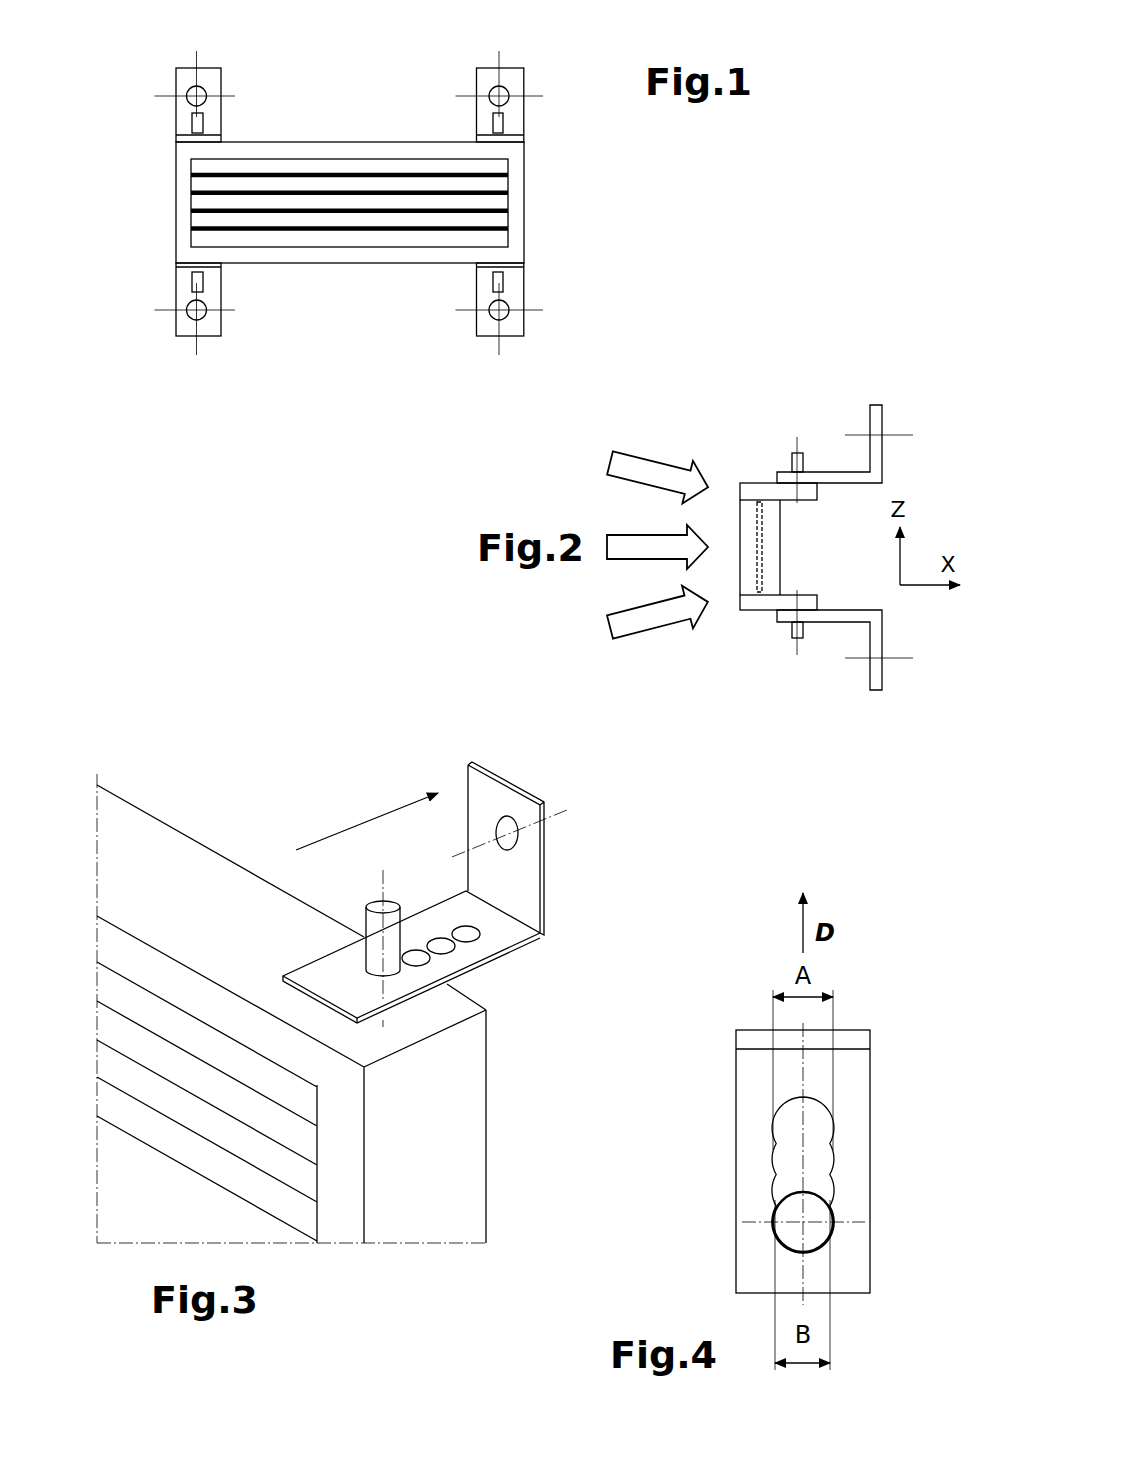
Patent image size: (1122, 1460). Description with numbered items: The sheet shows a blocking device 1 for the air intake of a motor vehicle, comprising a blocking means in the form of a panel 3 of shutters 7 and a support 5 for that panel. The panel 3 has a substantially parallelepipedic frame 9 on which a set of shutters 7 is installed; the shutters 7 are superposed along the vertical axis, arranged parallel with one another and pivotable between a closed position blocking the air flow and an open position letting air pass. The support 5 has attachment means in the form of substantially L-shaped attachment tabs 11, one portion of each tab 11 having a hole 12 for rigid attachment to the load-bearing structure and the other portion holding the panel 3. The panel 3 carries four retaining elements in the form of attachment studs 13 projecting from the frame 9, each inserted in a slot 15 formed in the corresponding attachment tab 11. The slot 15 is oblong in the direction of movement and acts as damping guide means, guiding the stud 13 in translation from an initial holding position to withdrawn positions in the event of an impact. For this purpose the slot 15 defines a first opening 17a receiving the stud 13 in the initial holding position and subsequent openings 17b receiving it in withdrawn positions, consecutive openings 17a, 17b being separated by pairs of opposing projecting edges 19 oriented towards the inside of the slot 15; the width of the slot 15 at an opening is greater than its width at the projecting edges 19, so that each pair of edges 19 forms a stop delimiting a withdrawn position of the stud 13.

In FIG. 1, the blocking device 1 is at (349, 203).
In FIG. 3, the blocking device 1 is at (365, 955).
In FIG. 1, the panel of shutters 3 is at (286, 140).
In FIG. 2, the panel of shutters 3 is at (778, 546).
In FIG. 3, the panel of shutters 3 is at (291, 982).
In FIG. 1, the support 5 is at (349, 203).
In FIG. 2, the support 5 is at (825, 519).
In FIG. 3, the support 5 is at (458, 902).
In FIG. 4, the support 5 is at (809, 1120).
In FIG. 1, the shutters 7 is at (372, 165).
In FIG. 3, the shutters 7 is at (181, 1071).
In FIG. 1, the frame 9 is at (392, 142).
In FIG. 3, the frame 9 is at (180, 860).
In FIG. 1, the attachment tab 11 is at (221, 82).
In FIG. 2, the attachment tab 11 is at (830, 471).
In FIG. 3, the attachment tab 11 is at (528, 896).
In FIG. 4, the attachment tab 11 is at (857, 1070).
In FIG. 1, the hole 12 is at (196, 82).
In FIG. 3, the hole 12 is at (512, 840).
In FIG. 1, the attachment stud 13 is at (193, 119).
In FIG. 2, the attachment stud 13 is at (793, 453).
In FIG. 3, the attachment stud 13 is at (368, 925).
In FIG. 4, the attachment stud 13 is at (817, 1235).
In FIG. 3, the slot 15 is at (484, 960).
In FIG. 4, the slot 15 is at (809, 1175).
In FIG. 3, the first opening 17a is at (393, 973).
In FIG. 4, the first opening 17a is at (788, 1235).
In FIG. 3, the second opening 17b is at (457, 932).
In FIG. 4, the second opening 17b is at (835, 1190).
In FIG. 4, the projecting edge 19 is at (830, 1143).